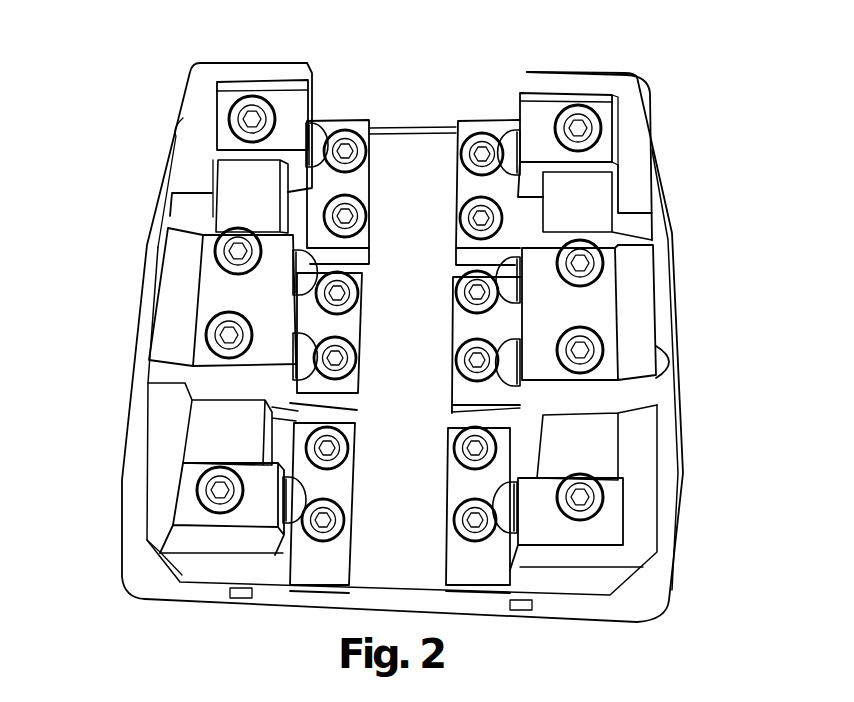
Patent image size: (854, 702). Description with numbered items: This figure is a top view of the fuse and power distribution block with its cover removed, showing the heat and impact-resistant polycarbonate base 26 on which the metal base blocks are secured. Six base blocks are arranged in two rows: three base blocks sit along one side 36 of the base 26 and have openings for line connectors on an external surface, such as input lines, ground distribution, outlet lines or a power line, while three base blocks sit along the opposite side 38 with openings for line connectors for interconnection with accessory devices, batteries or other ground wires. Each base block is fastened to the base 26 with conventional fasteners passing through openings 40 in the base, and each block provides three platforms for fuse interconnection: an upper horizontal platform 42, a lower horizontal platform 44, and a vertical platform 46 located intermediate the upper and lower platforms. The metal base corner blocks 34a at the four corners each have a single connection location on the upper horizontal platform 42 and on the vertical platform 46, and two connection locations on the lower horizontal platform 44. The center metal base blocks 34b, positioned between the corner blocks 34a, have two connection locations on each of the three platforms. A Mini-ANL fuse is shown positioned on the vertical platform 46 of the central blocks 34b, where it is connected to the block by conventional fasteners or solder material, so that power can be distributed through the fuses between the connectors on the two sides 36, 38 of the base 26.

The base 26 is at (660, 182).
The corner blocks 34a is at (193, 177).
The center base blocks 34b is at (180, 313).
The one side 36 is at (192, 60).
The opposite side 38 is at (650, 65).
The openings 40 is at (642, 367).
The upper horizontal platform 42 is at (587, 312).
The lower horizontal platform 44 is at (507, 220).
The vertical platform 46 is at (527, 128).